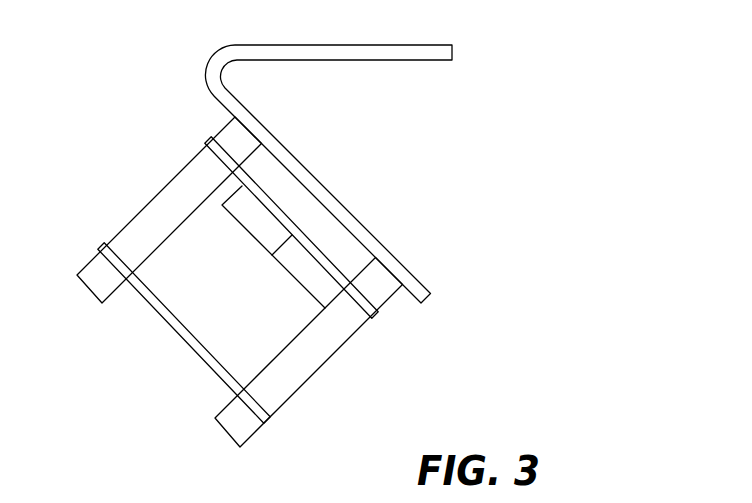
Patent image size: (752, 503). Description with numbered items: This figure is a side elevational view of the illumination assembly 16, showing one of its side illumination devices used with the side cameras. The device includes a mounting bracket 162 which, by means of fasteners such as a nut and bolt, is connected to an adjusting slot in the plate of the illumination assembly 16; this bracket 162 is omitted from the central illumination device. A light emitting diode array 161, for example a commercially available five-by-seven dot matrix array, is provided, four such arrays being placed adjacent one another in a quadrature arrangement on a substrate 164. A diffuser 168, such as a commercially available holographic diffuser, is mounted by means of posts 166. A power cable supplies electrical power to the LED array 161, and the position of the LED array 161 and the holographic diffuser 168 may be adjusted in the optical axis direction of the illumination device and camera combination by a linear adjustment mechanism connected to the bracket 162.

The illumination assembly 16 is at (112, 80).
The light emitting diode (LED) array 161 is at (290, 276).
The mounting bracket 162 is at (362, 45).
The substrate 164 is at (376, 318).
The posts 166 is at (162, 195).
The diffuser 168 is at (270, 424).